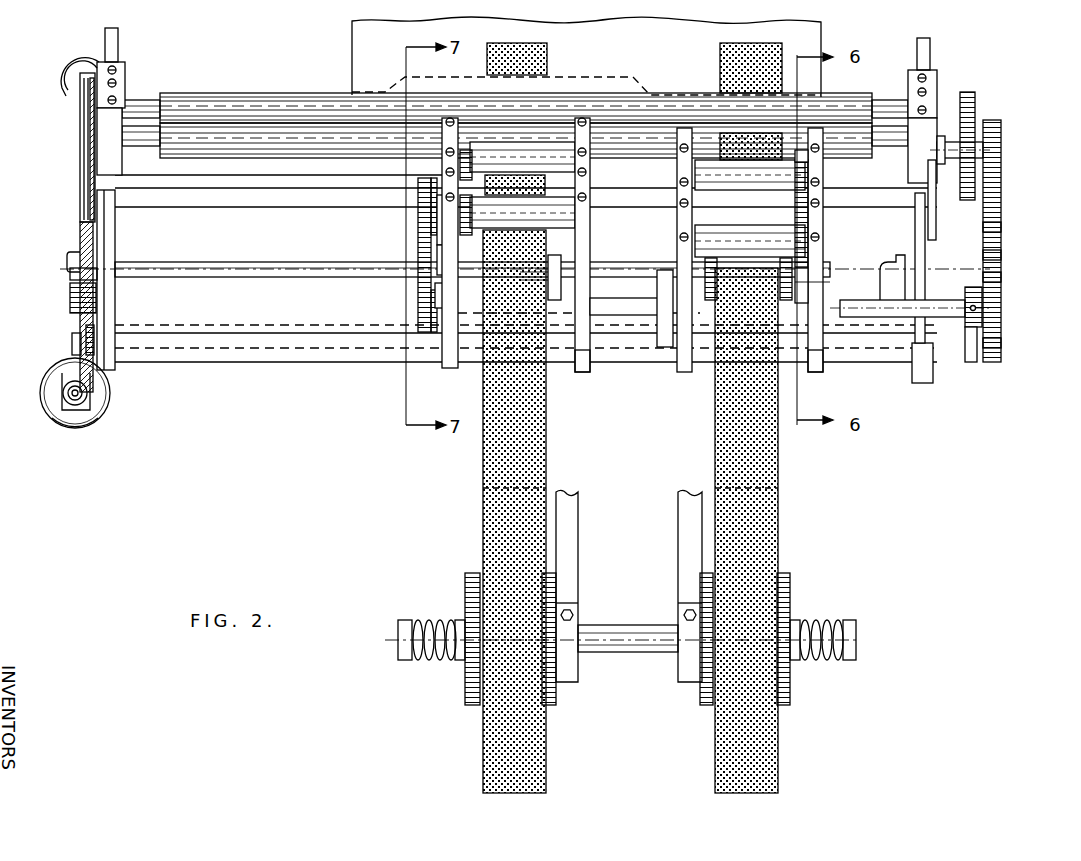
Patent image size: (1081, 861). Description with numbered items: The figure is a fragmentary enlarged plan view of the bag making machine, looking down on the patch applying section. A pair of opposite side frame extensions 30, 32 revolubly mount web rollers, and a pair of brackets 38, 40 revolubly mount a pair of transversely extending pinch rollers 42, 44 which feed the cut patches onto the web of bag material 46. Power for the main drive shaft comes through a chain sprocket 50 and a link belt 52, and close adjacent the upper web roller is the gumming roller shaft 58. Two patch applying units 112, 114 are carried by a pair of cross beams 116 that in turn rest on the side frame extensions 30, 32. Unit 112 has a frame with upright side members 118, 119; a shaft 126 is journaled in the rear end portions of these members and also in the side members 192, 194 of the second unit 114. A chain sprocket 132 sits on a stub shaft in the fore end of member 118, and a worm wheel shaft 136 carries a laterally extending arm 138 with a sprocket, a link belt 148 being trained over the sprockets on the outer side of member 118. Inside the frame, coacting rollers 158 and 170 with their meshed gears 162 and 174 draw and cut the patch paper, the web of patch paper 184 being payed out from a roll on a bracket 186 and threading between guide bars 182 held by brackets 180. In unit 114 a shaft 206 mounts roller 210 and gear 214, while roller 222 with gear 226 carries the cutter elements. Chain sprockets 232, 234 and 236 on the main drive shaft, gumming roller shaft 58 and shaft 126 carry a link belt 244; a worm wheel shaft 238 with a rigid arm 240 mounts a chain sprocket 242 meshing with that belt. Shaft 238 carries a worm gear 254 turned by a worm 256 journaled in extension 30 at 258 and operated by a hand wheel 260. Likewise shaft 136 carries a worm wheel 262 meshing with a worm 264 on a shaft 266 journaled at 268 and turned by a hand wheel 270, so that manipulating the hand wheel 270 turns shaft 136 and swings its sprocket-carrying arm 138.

The side frame extension 30 is at (105, 38).
The side frame extension 32 is at (930, 48).
The bracket 38 is at (125, 68).
The bracket 40 is at (937, 82).
The pinch roller 42 is at (226, 146).
The pinch roller 44 is at (236, 100).
The web of bag material 46 is at (352, 50).
The chain sprocket 50 is at (960, 200).
The link belt 52 is at (975, 98).
The gumming roller shaft 58 is at (952, 282).
The patch applying unit 112 is at (590, 232).
The patch applying unit 114 is at (823, 216).
The cross beams 116 is at (286, 200).
The side member 118 is at (443, 360).
The side member 119 is at (581, 372).
The shaft 126 is at (626, 318).
The chain sprocket 132 is at (418, 204).
The worm wheel shaft 136 is at (202, 262).
The arm 138 is at (418, 242).
The link belt 148 is at (418, 292).
The roller 158 is at (517, 215).
The gear 162 is at (437, 218).
The roller 170 is at (522, 168).
The gear 174 is at (440, 164).
The brackets 180 is at (562, 263).
The guide bars 182 is at (562, 278).
The web of patch paper 184 is at (546, 463).
The bracket 186 is at (578, 522).
The side member 192 is at (684, 372).
The side member 194 is at (816, 372).
The shaft 206 is at (982, 305).
The roller 210 is at (750, 262).
The gear 214 is at (808, 232).
The roller 222 is at (750, 161).
The gear 226 is at (823, 170).
The chain sprocket 232 is at (1001, 194).
The chain sprocket 234 is at (1001, 258).
The chain sprocket 236 is at (1001, 345).
The worm wheel shaft 238 is at (219, 348).
The arm 240 is at (972, 362).
The chain sprocket 242 is at (1001, 280).
The link belt 244 is at (1001, 230).
The worm gear 254 is at (72, 350).
The worm 256 is at (90, 392).
The journal 258 is at (62, 405).
The hand wheel 260 is at (90, 426).
The worm wheel 262 is at (80, 230).
The worm 264 is at (70, 298).
The shaft 266 is at (80, 152).
The journal 268 is at (68, 258).
The hand wheel 270 is at (66, 87).